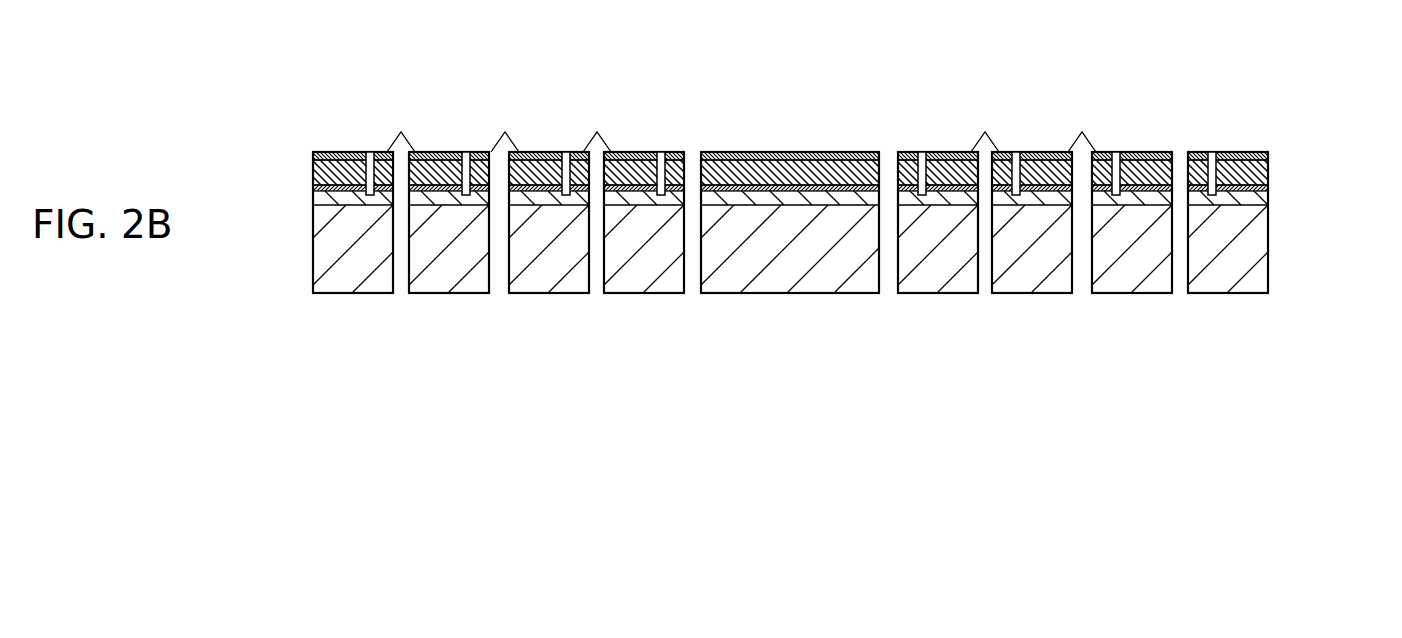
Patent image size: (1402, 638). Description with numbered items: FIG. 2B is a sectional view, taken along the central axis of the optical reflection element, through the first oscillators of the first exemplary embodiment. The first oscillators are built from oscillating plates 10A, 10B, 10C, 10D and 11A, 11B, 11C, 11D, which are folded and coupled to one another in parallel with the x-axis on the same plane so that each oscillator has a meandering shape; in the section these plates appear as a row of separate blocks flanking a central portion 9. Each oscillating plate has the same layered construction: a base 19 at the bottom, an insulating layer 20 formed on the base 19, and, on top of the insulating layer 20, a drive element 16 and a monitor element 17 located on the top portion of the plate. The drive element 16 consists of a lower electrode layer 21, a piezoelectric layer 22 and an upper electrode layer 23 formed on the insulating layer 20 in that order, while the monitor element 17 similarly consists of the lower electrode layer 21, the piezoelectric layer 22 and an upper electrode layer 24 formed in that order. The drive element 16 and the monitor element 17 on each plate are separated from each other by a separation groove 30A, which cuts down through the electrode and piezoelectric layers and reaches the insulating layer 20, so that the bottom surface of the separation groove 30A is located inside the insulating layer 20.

The semiconductor chip (central) 9 is at (701, 308).
The oscillating plate 10A is at (898, 308).
The oscillating plate 10B is at (992, 308).
The oscillating plate 10C is at (1092, 308).
The oscillating plate 10D is at (1188, 308).
The oscillating plate 11A is at (604, 308).
The oscillating plate 11B is at (509, 308).
The oscillating plate 11C is at (409, 308).
The oscillating plate 11D is at (313, 308).
The drive element 16 is at (1323, 200).
The monitor element 17 is at (1208, 63).
The base 19 is at (325, 253).
The insulating layer 20 is at (330, 197).
The lower electrode layer 21 is at (316, 188).
The piezoelectric layer 22 is at (313, 170).
The upper electrode layer 23 is at (320, 151).
The upper electrode layer 24 is at (1127, 152).
The separation groove 30A is at (660, 157).